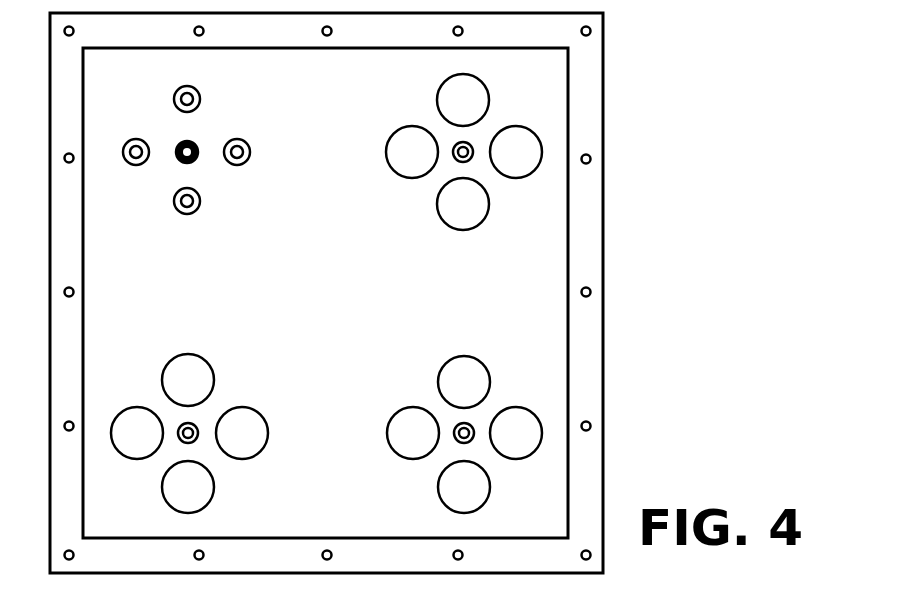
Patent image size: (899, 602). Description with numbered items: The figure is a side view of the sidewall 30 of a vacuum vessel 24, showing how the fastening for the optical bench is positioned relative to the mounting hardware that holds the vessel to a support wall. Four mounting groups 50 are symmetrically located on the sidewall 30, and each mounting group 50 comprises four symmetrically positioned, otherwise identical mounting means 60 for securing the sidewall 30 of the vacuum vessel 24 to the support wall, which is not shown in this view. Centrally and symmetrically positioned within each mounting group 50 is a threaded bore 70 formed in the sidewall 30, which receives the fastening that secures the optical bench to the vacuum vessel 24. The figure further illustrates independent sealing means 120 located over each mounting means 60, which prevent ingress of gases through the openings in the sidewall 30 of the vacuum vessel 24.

The vacuum vessel 24 is at (634, 115).
The sidewall 30 is at (382, 275).
The mounting group 50 is at (333, 289).
The mounting means 60 is at (174, 96).
The threaded bore 70 is at (180, 162).
The sealing means 120 is at (515, 160).